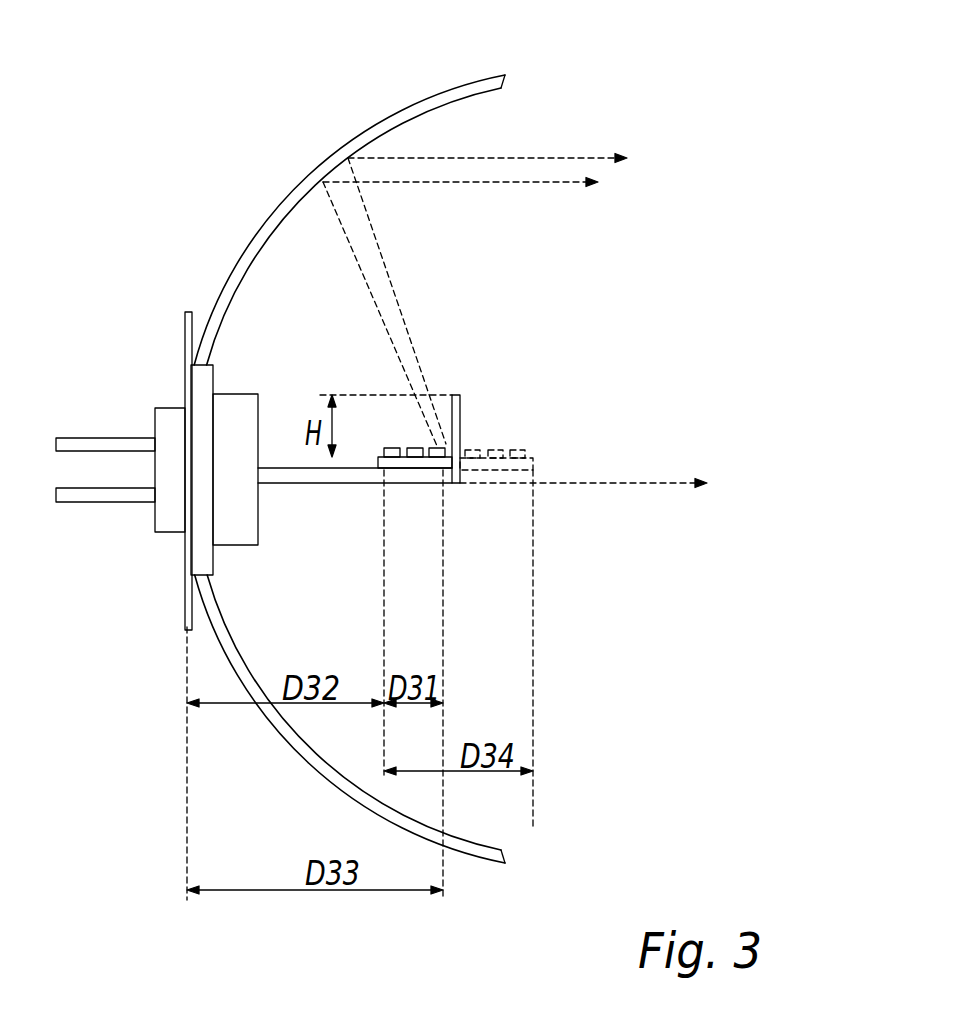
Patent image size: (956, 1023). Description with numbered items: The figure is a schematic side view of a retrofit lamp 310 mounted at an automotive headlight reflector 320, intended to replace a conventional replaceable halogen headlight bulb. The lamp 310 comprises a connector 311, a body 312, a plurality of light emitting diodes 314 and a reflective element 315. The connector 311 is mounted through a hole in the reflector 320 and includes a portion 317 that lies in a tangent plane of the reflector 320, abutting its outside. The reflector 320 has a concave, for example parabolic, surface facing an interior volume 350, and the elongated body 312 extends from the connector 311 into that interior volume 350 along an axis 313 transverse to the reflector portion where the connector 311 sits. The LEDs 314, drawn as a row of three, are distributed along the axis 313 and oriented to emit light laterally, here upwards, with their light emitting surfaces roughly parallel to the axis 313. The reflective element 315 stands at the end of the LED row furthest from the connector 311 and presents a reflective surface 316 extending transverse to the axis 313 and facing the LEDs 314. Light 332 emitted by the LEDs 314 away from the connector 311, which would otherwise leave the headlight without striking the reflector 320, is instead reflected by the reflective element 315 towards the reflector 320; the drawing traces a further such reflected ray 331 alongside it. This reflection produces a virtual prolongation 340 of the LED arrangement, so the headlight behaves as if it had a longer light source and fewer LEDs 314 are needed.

The retrofit lamp 310 is at (618, 300).
The connector 311 is at (250, 579).
The body 312 is at (275, 468).
The axis 313 is at (612, 488).
The light emitting diodes 314 is at (428, 455).
The reflective element 315 is at (462, 442).
The reflective surface 316 is at (453, 394).
The portion of the connector 317 is at (187, 600).
The automotive headlight reflector 320 is at (304, 180).
The reflected light ray 331 is at (460, 312).
The light 332 is at (487, 281).
The virtual prolongation 340 is at (552, 455).
The interior volume 350 is at (330, 333).